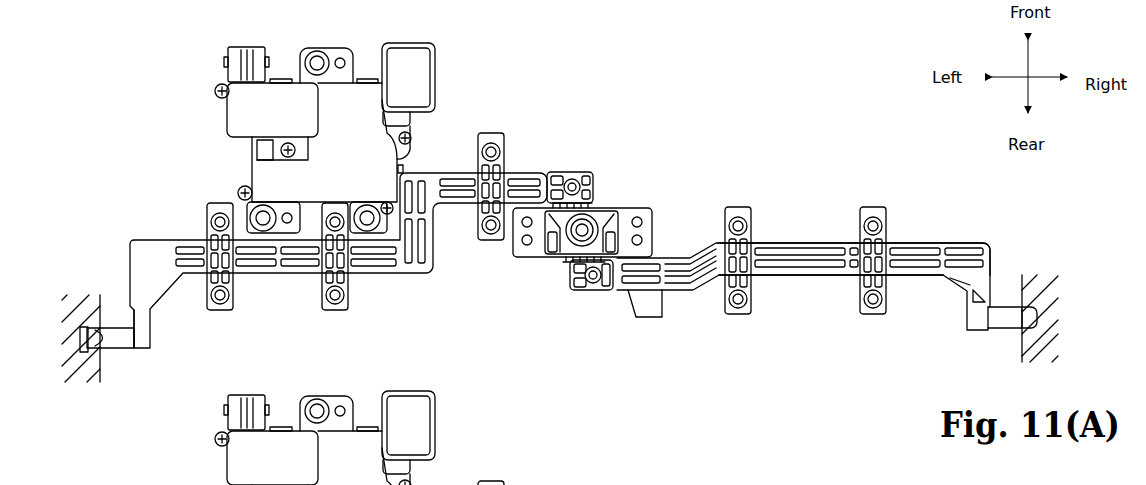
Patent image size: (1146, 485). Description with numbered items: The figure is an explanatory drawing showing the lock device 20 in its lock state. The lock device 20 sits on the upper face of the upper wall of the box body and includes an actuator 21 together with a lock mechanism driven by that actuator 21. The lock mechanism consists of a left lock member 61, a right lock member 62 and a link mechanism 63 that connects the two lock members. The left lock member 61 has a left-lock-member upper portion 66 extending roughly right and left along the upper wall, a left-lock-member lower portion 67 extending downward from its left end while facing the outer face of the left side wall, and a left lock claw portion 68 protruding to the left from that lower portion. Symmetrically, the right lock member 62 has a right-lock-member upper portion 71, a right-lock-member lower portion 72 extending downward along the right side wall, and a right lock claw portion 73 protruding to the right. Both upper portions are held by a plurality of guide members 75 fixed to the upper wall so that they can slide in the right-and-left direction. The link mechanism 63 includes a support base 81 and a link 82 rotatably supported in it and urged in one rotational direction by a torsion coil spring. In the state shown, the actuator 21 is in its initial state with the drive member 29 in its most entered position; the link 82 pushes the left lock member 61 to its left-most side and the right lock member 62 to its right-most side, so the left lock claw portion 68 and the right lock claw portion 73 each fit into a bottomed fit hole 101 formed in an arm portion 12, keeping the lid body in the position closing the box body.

The arm portion 12 is at (86, 297).
The lock device 20 is at (598, 242).
The actuator 21 is at (416, 37).
The drive member 29 is at (400, 168).
The left lock member 61 is at (140, 230).
The right lock member 62 is at (927, 236).
The link mechanism 63 is at (638, 207).
The left-lock-member upper portion 66 is at (405, 265).
The left-lock-member lower portion 67 is at (148, 321).
The left lock claw portion 68 is at (123, 342).
The right-lock-member upper portion 71 is at (802, 267).
The right-lock-member lower portion 72 is at (967, 312).
The right lock claw portion 73 is at (1000, 322).
The guide member 75 is at (223, 318).
The support base 81 is at (658, 220).
The link 82 is at (566, 262).
The fit hole 101 is at (98, 343).